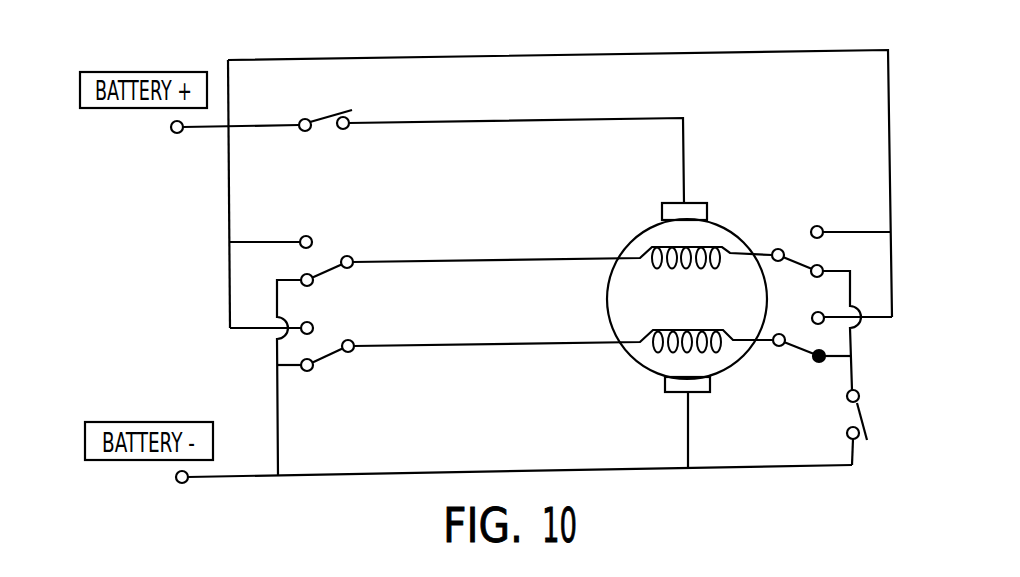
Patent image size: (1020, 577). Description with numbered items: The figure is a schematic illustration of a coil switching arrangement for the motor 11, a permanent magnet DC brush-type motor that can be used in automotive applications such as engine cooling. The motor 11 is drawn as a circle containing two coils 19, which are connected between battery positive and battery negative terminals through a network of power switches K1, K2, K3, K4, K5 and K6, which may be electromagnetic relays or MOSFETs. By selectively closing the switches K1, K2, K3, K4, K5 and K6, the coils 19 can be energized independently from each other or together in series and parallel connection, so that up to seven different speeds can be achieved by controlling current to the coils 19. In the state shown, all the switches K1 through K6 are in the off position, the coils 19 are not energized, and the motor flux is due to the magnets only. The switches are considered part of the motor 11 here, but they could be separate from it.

The motor 11 is at (640, 238).
The coils 19 is at (715, 263).
The switch K1 is at (303, 102).
The switch K2 is at (300, 238).
The switch K3 is at (329, 371).
The switch K4 is at (796, 253).
The switch K5 is at (800, 372).
The switch K6 is at (887, 415).